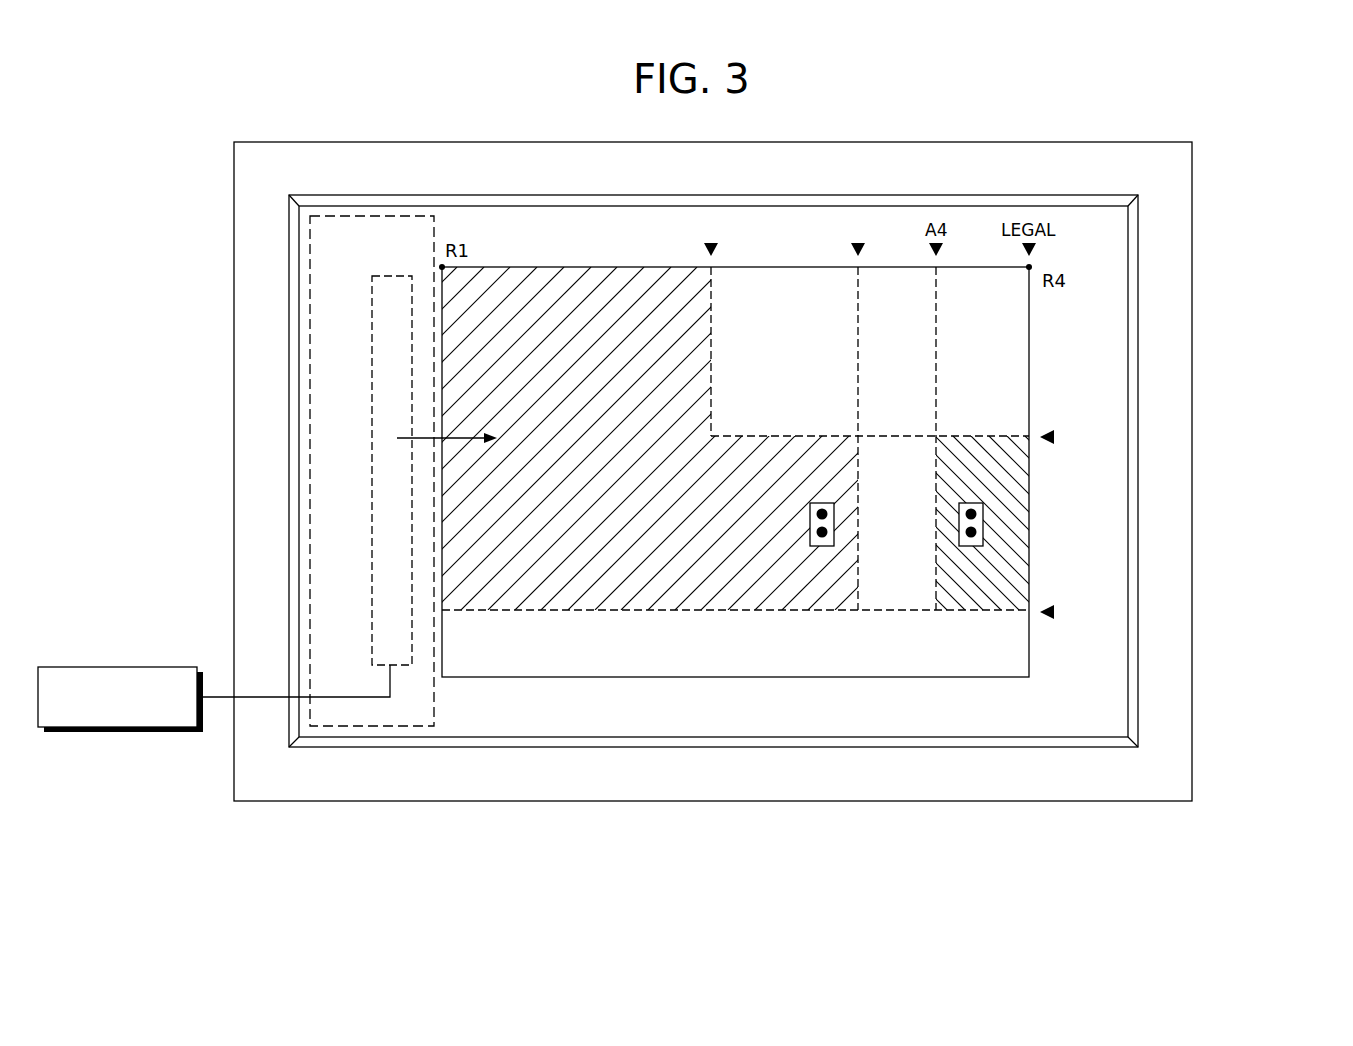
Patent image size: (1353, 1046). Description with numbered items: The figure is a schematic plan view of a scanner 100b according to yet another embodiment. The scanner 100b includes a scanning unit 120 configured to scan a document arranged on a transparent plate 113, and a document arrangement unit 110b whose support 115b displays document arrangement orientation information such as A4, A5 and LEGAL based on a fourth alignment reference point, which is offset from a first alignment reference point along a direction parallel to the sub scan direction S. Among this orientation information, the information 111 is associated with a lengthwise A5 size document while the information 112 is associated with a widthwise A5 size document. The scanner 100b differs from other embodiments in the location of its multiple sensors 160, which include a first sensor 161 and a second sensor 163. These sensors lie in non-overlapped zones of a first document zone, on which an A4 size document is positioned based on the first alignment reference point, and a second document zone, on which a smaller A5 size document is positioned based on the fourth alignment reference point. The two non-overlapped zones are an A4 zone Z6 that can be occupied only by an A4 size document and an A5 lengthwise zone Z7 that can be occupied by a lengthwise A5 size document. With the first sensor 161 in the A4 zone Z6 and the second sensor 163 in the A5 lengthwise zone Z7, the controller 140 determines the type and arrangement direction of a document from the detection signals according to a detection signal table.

The scanner 100b is at (1208, 134).
The document arrangement unit 110b is at (1030, 438).
The document arrangement orientation information for lengthwise A5 size document 111 is at (857, 218).
The document arrangement orientation information for widthwise A5 size document 112 is at (718, 218).
The transparent plate 113 is at (985, 373).
The support 115b is at (1090, 491).
The scanning unit 120 is at (392, 282).
The controller 140 is at (117, 665).
The multiple sensors 160 is at (900, 698).
The first sensor 161 is at (826, 546).
The second sensor 163 is at (975, 546).
The sub scan direction S is at (490, 445).
The A4 zone Z6 is at (660, 580).
The A5 lengthwise zone Z7 is at (1007, 537).